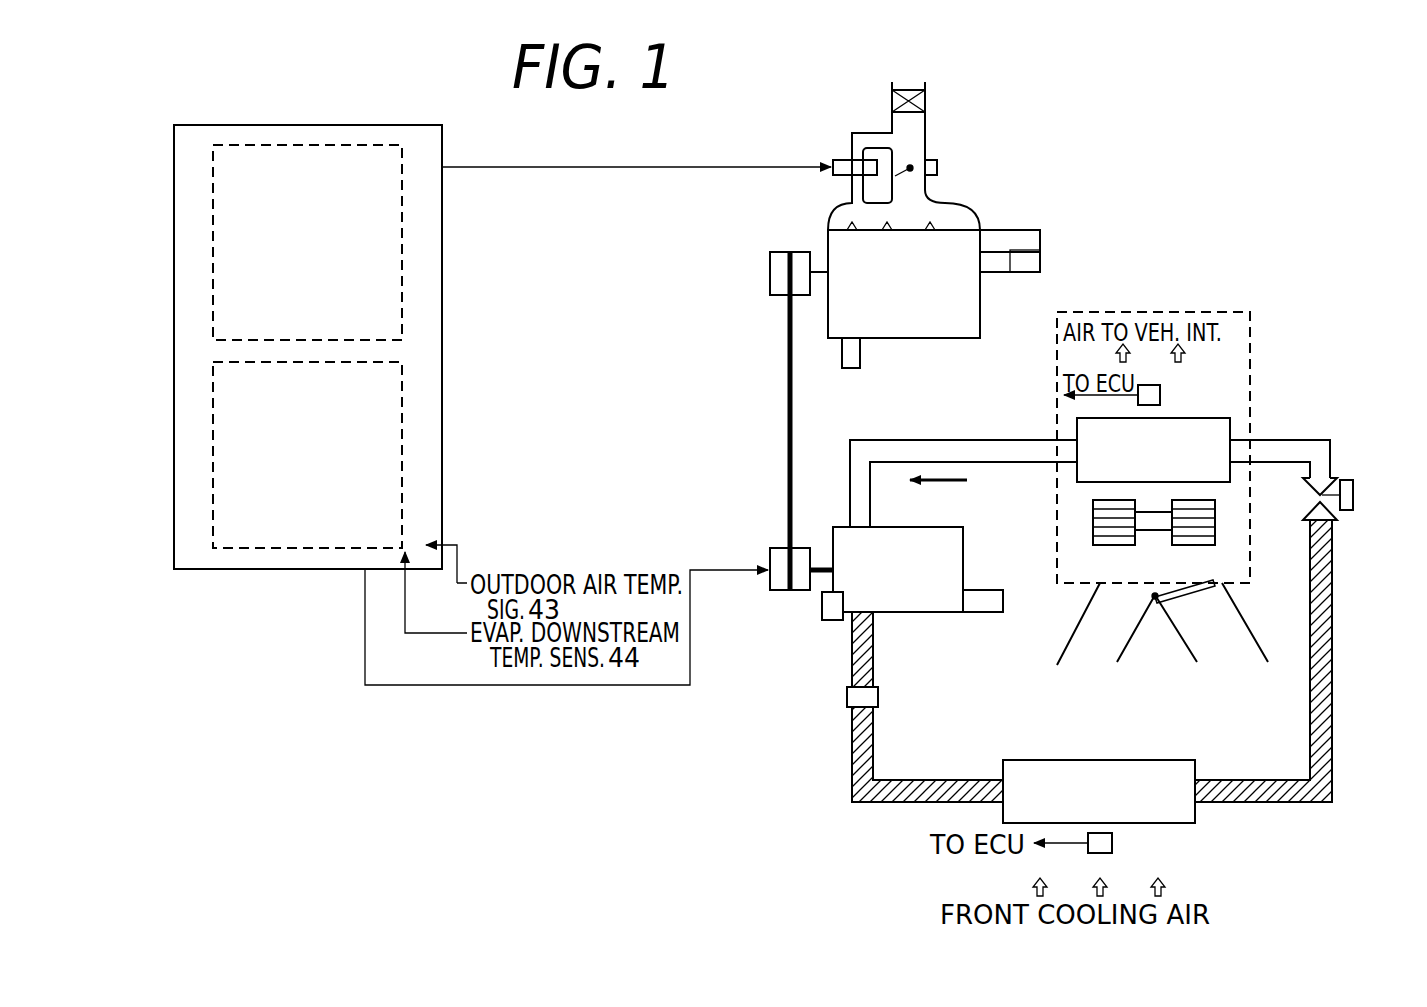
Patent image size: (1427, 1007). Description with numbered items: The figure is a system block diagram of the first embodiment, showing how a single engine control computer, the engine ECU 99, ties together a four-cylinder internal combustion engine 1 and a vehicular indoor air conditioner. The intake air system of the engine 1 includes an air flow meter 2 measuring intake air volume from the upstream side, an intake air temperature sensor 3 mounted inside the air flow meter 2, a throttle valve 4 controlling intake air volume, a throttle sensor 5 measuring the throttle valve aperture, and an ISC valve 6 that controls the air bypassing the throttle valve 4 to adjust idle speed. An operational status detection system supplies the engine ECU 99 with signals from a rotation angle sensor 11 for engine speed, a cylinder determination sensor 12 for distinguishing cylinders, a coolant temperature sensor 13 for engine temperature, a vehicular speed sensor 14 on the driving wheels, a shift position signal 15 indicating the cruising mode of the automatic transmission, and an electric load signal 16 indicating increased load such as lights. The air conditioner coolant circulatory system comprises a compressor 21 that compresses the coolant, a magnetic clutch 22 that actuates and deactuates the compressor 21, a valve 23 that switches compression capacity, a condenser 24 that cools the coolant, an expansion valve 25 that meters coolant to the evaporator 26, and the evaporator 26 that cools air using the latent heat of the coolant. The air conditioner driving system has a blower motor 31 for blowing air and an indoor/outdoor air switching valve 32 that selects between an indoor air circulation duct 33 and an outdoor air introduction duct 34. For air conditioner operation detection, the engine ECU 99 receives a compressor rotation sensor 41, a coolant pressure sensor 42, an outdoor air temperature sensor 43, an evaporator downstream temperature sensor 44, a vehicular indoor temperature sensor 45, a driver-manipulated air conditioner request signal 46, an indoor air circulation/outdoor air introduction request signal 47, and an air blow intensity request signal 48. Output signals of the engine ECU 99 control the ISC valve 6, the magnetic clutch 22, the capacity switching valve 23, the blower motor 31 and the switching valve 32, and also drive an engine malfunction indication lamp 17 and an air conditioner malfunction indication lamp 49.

The internal combustion engine 1 is at (980, 315).
The air flow meter 2 is at (930, 97).
The intake air temperature sensor 3 is at (426, 228).
The throttle valve 4 is at (911, 173).
The throttle sensor 5 is at (941, 165).
The ISC valve 6 is at (835, 162).
The rotation angle sensor 11 is at (1018, 229).
The cylinder determination sensor 12 is at (1022, 273).
The coolant temperature sensor 13 is at (861, 365).
The vehicular speed sensor 14 is at (426, 257).
The shift position signal 15 is at (426, 286).
The electric load signal 16 is at (426, 316).
The engine malfunction indication lamp 17 is at (422, 200).
The compressor 21 is at (965, 570).
The magnetic clutch 22 is at (800, 546).
The valve 23 is at (985, 612).
The condenser 24 is at (1163, 823).
The expansion valve 25 is at (1347, 480).
The evaporator 26 is at (1196, 418).
The blower motor 31 is at (1093, 527).
The indoor/outdoor air switching valve 32 is at (1190, 592).
The indoor air circulation duct 33 is at (1088, 662).
The outdoor air introduction duct 34 is at (1238, 662).
The compressor rotation sensor 41 is at (829, 619).
The coolant pressure sensor 42 is at (847, 697).
The outdoor air temperature sensor 43 is at (1112, 843).
The evaporator downstream temperature sensor 44 is at (1160, 392).
The vehicular indoor temperature sensor 45 is at (426, 412).
The air conditioner request signal 46 is at (426, 440).
The indoor air circulation/outdoor air introduction request signal 47 is at (426, 470).
The air blow intensity request signal 48 is at (426, 528).
The air conditioner malfunction indication lamp 49 is at (422, 382).
The engine ECU 99 is at (297, 572).